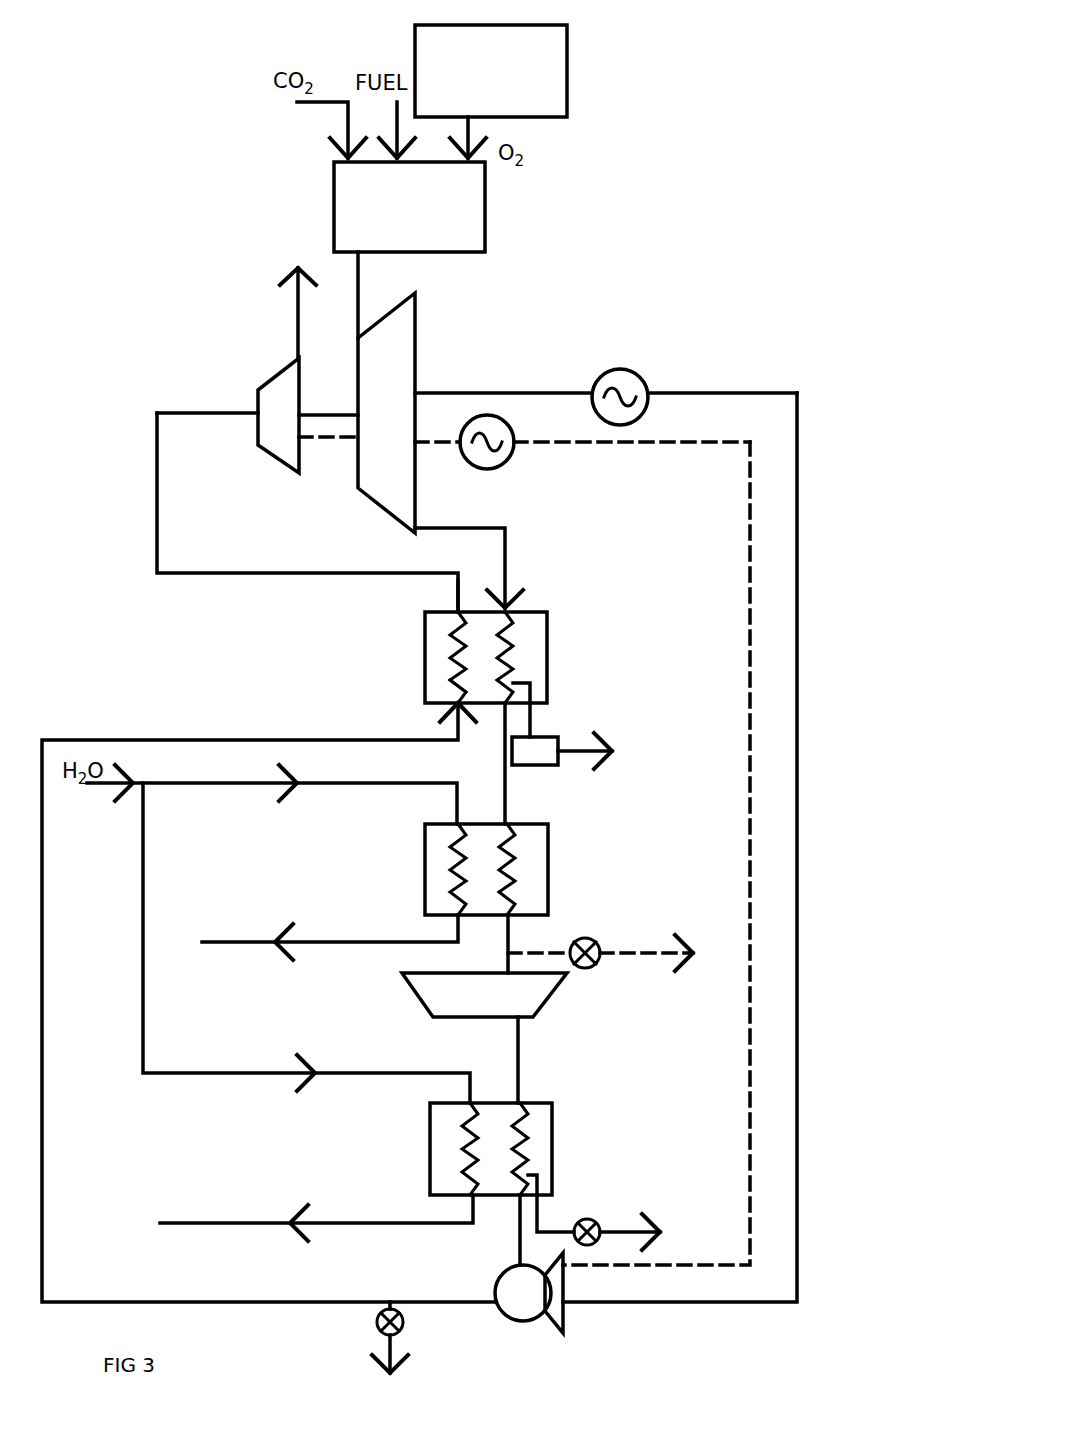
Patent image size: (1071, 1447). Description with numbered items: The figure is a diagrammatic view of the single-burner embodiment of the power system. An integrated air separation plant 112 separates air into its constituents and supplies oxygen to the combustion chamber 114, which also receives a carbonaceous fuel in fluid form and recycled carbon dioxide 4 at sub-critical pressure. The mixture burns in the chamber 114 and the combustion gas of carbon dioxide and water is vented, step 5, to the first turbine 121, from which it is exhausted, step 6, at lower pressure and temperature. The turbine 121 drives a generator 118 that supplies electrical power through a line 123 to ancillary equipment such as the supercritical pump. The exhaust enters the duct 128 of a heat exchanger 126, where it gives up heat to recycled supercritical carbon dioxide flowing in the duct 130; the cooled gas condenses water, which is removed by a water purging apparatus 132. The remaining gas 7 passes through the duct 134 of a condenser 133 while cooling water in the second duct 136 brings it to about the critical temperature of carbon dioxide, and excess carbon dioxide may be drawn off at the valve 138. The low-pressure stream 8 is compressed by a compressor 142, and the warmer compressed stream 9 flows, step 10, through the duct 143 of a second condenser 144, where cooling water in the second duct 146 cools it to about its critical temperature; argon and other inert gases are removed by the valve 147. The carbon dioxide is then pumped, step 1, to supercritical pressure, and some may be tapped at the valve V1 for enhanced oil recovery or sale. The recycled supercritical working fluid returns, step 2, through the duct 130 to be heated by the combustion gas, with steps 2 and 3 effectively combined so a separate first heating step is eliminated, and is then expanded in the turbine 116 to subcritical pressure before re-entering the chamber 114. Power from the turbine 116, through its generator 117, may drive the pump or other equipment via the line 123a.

The integrated air separation plant 112 is at (491, 91).
The combustion chamber 114 is at (409, 207).
The turbine 116 is at (308, 415).
The generator 117 is at (505, 467).
The generator 118 is at (607, 370).
The first turbine 121 is at (386, 413).
The line 123 is at (797, 784).
The line 123a is at (748, 696).
The heat exchanger 126 is at (425, 648).
The duct 128 is at (527, 610).
The duct 130 is at (457, 686).
The water purging apparatus 132 is at (562, 726).
The condenser 133 is at (548, 885).
The duct 134 is at (508, 838).
The second duct 136 is at (334, 892).
The valve 138 is at (598, 947).
The compressor 142 is at (484, 995).
The duct 143 is at (517, 1118).
The second condenser 144 is at (552, 1157).
The second duct 146 is at (430, 1152).
The valve 147 is at (613, 1212).
The step 1 (supercritical pumping) 1 is at (517, 1293).
The step 2 (recuperative heating) 2 is at (458, 594).
The step 3 is at (307, 512).
The step 4 (recycled carbon dioxide feed) 4 is at (297, 313).
The step 5 (combustion gas venting) 5 is at (371, 295).
The step 6 (turbine exhaust) 6 is at (469, 568).
The step 7 (cooled combustion gas) 7 is at (500, 706).
The step 8 (condensed carbon dioxide) 8 is at (499, 944).
The step 9 (compressed carbon dioxide) 9 is at (509, 1060).
The step 10 (second condensation) 10 is at (515, 1198).
The valve V1 is at (377, 1333).